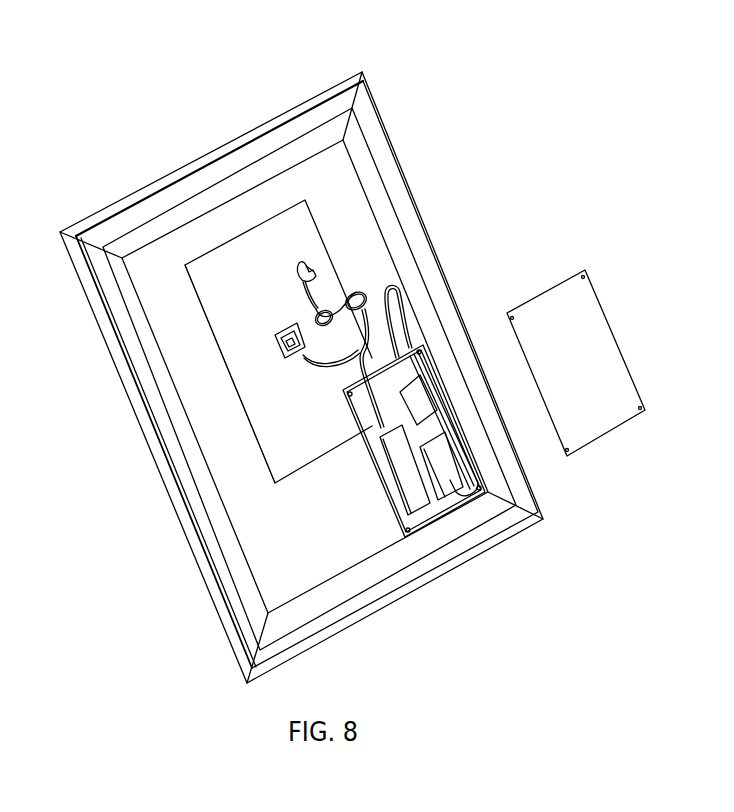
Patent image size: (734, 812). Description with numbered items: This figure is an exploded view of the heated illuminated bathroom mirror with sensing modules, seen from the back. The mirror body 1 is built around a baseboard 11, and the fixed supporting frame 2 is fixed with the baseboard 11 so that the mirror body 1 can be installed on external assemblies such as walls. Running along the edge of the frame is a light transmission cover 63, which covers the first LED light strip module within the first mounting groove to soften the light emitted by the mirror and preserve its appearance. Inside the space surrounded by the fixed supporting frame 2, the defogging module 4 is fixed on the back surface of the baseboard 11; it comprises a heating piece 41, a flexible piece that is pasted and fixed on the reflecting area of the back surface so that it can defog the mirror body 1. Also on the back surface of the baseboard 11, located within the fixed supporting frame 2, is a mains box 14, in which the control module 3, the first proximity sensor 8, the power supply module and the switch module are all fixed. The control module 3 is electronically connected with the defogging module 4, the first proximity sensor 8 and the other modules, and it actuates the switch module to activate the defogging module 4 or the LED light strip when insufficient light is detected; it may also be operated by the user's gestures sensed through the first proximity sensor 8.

The mirror body 1 is at (346, 76).
The baseboard 11 is at (70, 226).
The fixed supporting frame 2 is at (102, 281).
The light transmission cover 63 is at (161, 465).
The defogging module 4 is at (262, 420).
The heating piece 41 is at (289, 441).
The first proximity sensor 8 is at (429, 350).
The mains box 14 is at (411, 541).
The control module 3 is at (458, 473).